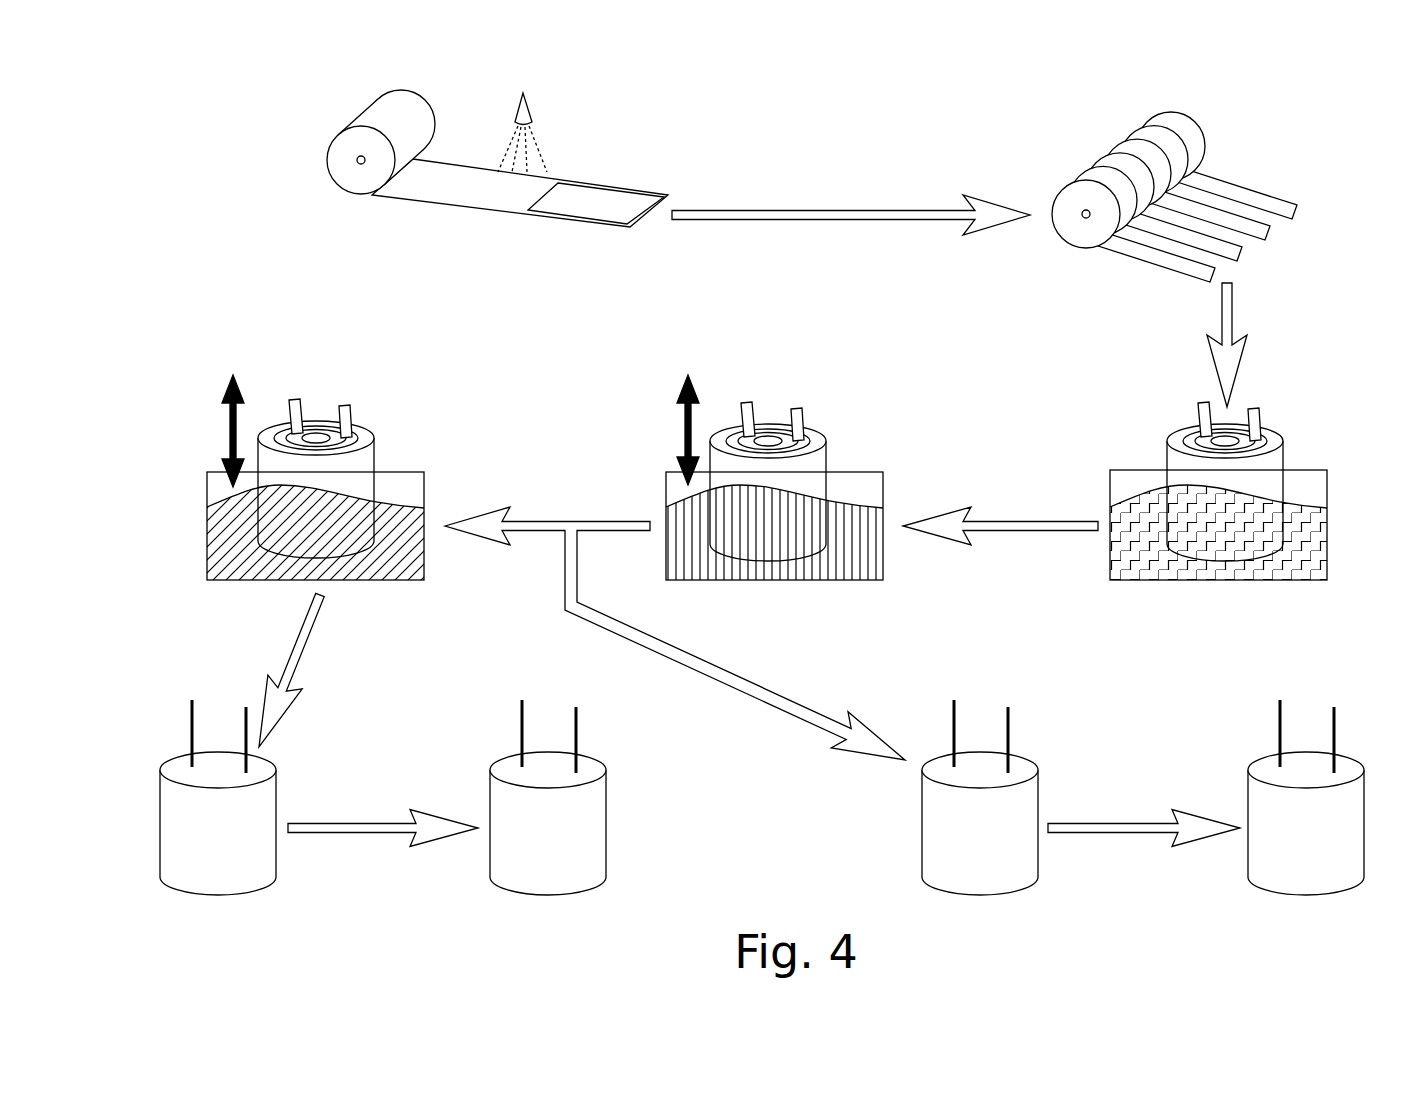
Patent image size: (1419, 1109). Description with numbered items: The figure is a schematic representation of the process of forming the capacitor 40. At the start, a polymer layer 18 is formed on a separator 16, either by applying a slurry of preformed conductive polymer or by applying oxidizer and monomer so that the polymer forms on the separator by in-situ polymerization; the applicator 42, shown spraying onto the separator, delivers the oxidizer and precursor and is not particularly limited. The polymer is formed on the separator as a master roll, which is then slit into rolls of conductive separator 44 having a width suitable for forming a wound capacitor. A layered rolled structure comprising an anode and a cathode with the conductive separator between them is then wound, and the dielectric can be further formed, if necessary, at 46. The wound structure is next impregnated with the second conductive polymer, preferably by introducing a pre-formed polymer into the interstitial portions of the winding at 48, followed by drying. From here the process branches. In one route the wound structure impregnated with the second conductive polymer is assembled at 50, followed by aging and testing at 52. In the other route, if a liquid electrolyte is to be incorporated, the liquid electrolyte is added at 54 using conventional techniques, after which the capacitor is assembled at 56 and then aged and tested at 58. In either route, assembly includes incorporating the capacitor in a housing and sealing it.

The separator 16 is at (468, 193).
The polymer layer 18 is at (617, 205).
The process of forming the capacitor 40 is at (584, 130).
The applicator 42 is at (520, 113).
The slit rolls of conductive separator 44 is at (1267, 168).
The dielectric formation step 46 is at (1308, 440).
The second conductive polymer impregnation step 48 is at (859, 441).
The assembly step 50 is at (1025, 914).
The aging and testing step 52 is at (1345, 915).
The liquid electrolyte addition step 54 is at (401, 440).
The capacitor assembly step 56 is at (202, 915).
The aging and testing step 58 is at (532, 915).